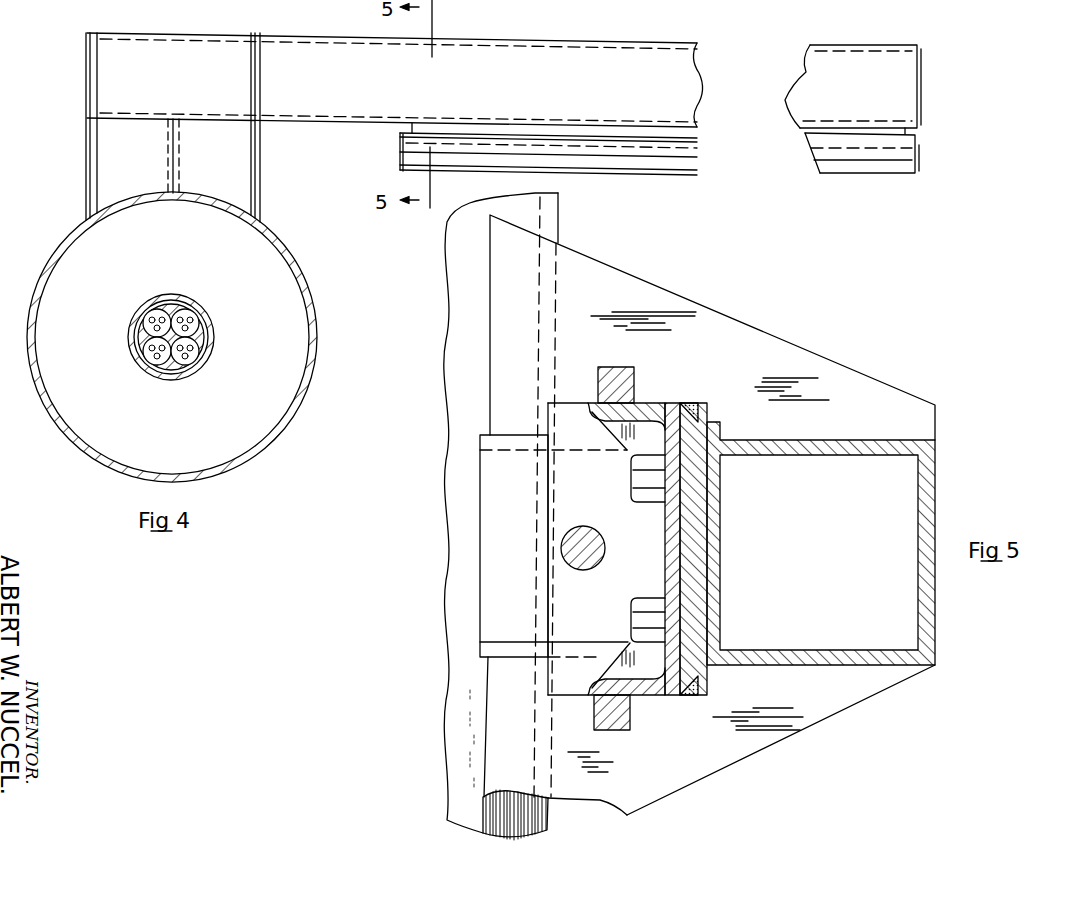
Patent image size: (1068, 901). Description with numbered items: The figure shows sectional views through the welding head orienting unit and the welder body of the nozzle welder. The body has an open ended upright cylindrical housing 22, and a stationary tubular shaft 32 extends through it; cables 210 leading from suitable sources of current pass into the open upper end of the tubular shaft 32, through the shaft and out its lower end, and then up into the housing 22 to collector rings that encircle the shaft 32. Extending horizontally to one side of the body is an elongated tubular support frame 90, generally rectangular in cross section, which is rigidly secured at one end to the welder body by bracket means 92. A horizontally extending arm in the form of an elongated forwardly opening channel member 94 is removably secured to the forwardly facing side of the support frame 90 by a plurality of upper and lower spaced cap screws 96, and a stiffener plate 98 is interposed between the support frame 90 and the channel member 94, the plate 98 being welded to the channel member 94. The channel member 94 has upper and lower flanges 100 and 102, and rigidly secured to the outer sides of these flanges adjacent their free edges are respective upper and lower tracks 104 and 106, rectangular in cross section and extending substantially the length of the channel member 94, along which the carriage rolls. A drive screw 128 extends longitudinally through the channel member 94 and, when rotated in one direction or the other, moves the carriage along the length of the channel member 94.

In FIG. 4, the cylindrical housing 22 is at (305, 383).
In FIG. 5, the cylindrical housing 22 is at (447, 500).
In FIG. 4, the tubular shaft 32 is at (212, 297).
In FIG. 4, the cables 210 is at (173, 360).
In FIG. 4, the tubular support frame 90 is at (542, 43).
In FIG. 5, the tubular support frame 90 is at (905, 440).
In FIG. 4, the bracket means 92 is at (261, 162).
In FIG. 5, the bracket means 92 is at (831, 360).
In FIG. 4, the channel member 94 is at (886, 175).
In FIG. 5, the channel member 94 is at (660, 697).
In FIG. 5, the cap screws 96 is at (632, 478).
In FIG. 4, the stiffener plate 98 is at (908, 133).
In FIG. 5, the stiffener plate 98 is at (707, 668).
In FIG. 4, the upper flange 100 is at (912, 153).
In FIG. 5, the upper flange 100 is at (676, 400).
In FIG. 5, the lower flange 102 is at (645, 697).
In FIG. 4, the upper track 104 is at (665, 163).
In FIG. 5, the upper track 104 is at (610, 366).
In FIG. 5, the lower track 106 is at (612, 733).
In FIG. 5, the drive screw 128 is at (603, 547).